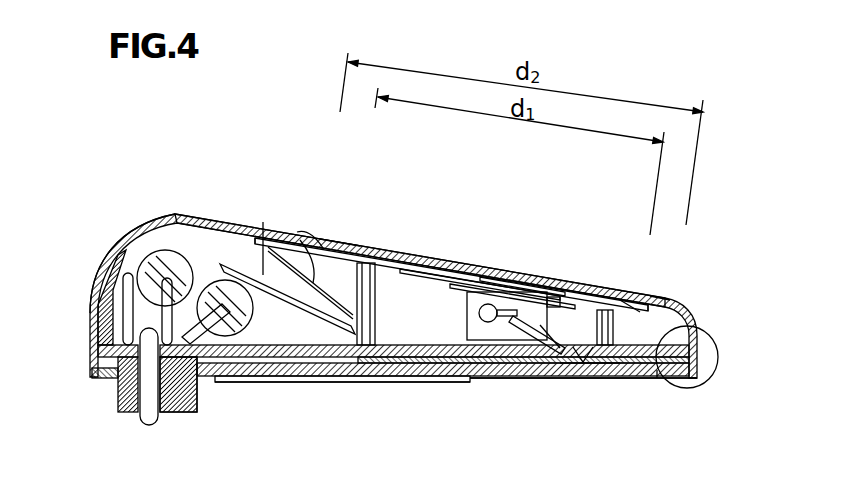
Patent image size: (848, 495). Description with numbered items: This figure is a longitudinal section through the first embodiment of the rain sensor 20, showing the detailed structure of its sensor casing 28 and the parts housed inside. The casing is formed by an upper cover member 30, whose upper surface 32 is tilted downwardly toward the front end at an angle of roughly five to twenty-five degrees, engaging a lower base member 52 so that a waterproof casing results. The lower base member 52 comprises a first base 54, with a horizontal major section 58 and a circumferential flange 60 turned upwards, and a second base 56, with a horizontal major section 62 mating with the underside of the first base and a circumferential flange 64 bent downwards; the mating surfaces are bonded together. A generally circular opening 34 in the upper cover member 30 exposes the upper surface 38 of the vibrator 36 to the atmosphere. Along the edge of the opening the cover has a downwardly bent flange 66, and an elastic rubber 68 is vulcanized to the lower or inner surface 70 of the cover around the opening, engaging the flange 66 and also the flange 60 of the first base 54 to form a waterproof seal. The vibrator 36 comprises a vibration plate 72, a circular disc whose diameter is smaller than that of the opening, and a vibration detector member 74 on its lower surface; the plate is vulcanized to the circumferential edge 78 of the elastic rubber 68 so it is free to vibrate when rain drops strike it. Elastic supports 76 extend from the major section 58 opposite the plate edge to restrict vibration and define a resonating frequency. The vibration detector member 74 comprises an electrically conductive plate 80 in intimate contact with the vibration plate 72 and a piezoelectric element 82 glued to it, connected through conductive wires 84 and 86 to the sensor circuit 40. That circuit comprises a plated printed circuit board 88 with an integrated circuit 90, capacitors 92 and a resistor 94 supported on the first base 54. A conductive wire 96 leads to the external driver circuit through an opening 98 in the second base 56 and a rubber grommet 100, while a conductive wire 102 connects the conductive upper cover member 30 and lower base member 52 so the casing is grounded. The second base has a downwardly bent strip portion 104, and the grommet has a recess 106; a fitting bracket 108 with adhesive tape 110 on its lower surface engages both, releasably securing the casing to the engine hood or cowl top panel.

The rain sensor 20 is at (672, 290).
The sensor casing 28 is at (282, 217).
The upper cover member 30 is at (197, 220).
The upper surface 32 is at (322, 240).
The circular opening 34 is at (657, 310).
The vibrator 36 is at (447, 257).
The upper surface of vibrator 38 is at (420, 257).
The sensor circuit 40 is at (235, 262).
The lower base member 52 is at (508, 387).
The first base 54 is at (592, 376).
The second base 56 is at (380, 368).
The horizontal major section 58 is at (295, 380).
The circumferential flange 60 is at (102, 320).
The horizontal major section 62 is at (450, 378).
The circumferential flange 64 is at (105, 377).
The bent flange 66 is at (322, 238).
The elastic rubber 68 is at (347, 253).
The lower or inner surface 70 is at (305, 240).
The vibration plate 72 is at (510, 273).
The vibration detector member 74 is at (450, 277).
The elastic supports 76 is at (375, 300).
The circumferential edge 78 is at (620, 310).
The electrically conductive plate 80 is at (477, 275).
The piezoelectric element 82 is at (527, 280).
The conductive wire 84 is at (580, 293).
The conductive wire 86 is at (547, 327).
The plated printed circuit board 88 is at (227, 357).
The integrated circuit 90 is at (262, 220).
The capacitors 92 is at (165, 257).
The resistor 94 is at (120, 287).
The conductive wire 96 is at (145, 410).
The opening 98 is at (113, 390).
The rubber grommet 100 is at (180, 412).
The conductive wire 102 is at (560, 376).
The strip portion 104 is at (602, 373).
The recess 106 is at (192, 373).
The fitting bracket 108 is at (410, 382).
The adhesive tape 110 is at (335, 382).